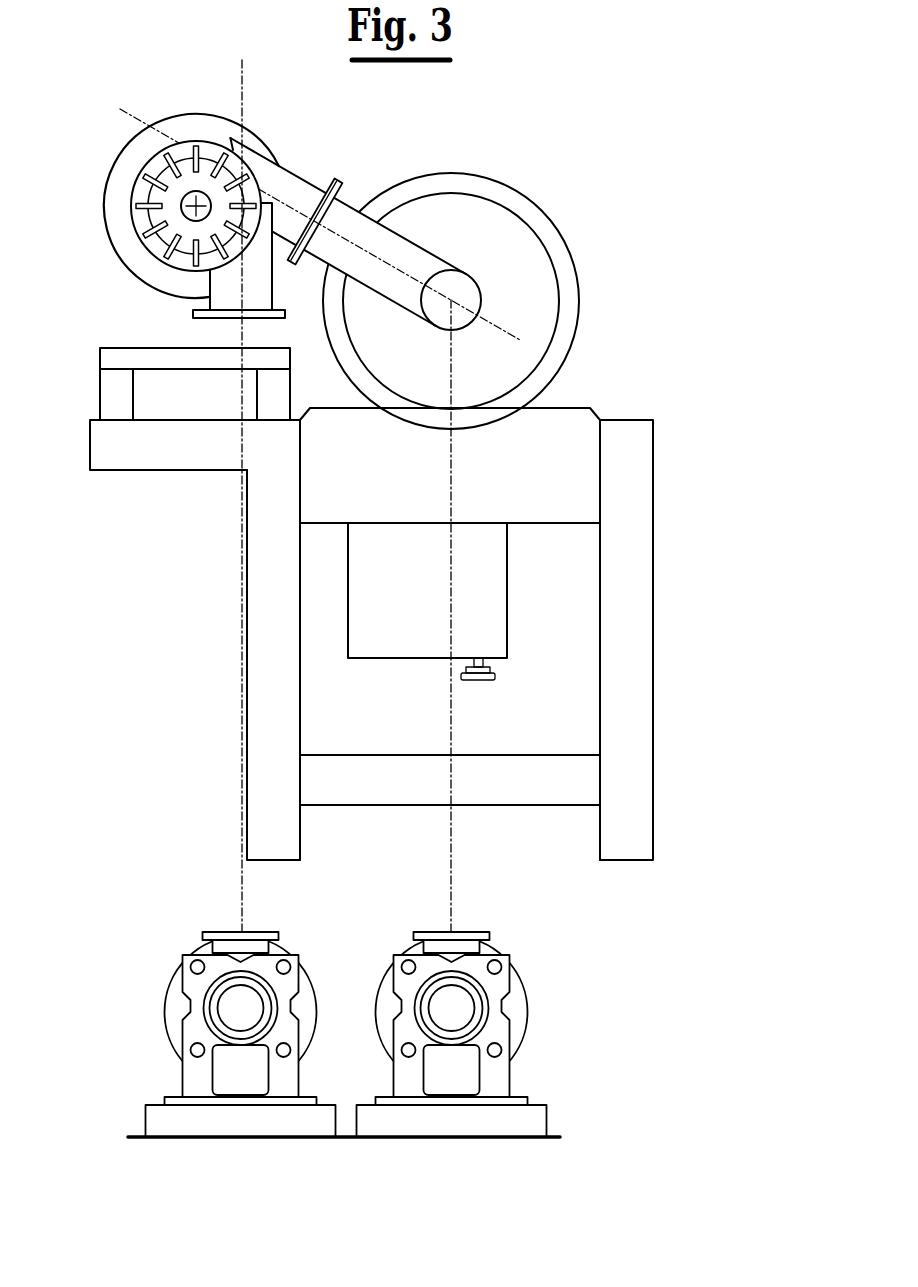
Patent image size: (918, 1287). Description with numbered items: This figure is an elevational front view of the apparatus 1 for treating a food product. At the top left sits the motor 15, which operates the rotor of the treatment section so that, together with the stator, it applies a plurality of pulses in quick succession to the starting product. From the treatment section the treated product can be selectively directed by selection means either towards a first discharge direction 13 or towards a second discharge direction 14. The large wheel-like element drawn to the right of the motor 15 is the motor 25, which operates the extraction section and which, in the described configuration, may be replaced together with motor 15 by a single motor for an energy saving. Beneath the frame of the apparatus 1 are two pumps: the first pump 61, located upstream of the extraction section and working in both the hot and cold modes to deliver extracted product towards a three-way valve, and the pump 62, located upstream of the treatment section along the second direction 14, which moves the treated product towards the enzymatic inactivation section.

The apparatus 1 is at (742, 213).
The first discharge direction 13 is at (282, 200).
The second discharge direction 14 is at (240, 268).
The motor 15 is at (91, 143).
The motor 25 is at (521, 179).
The first pump 61 is at (553, 962).
The pump 62 is at (151, 955).